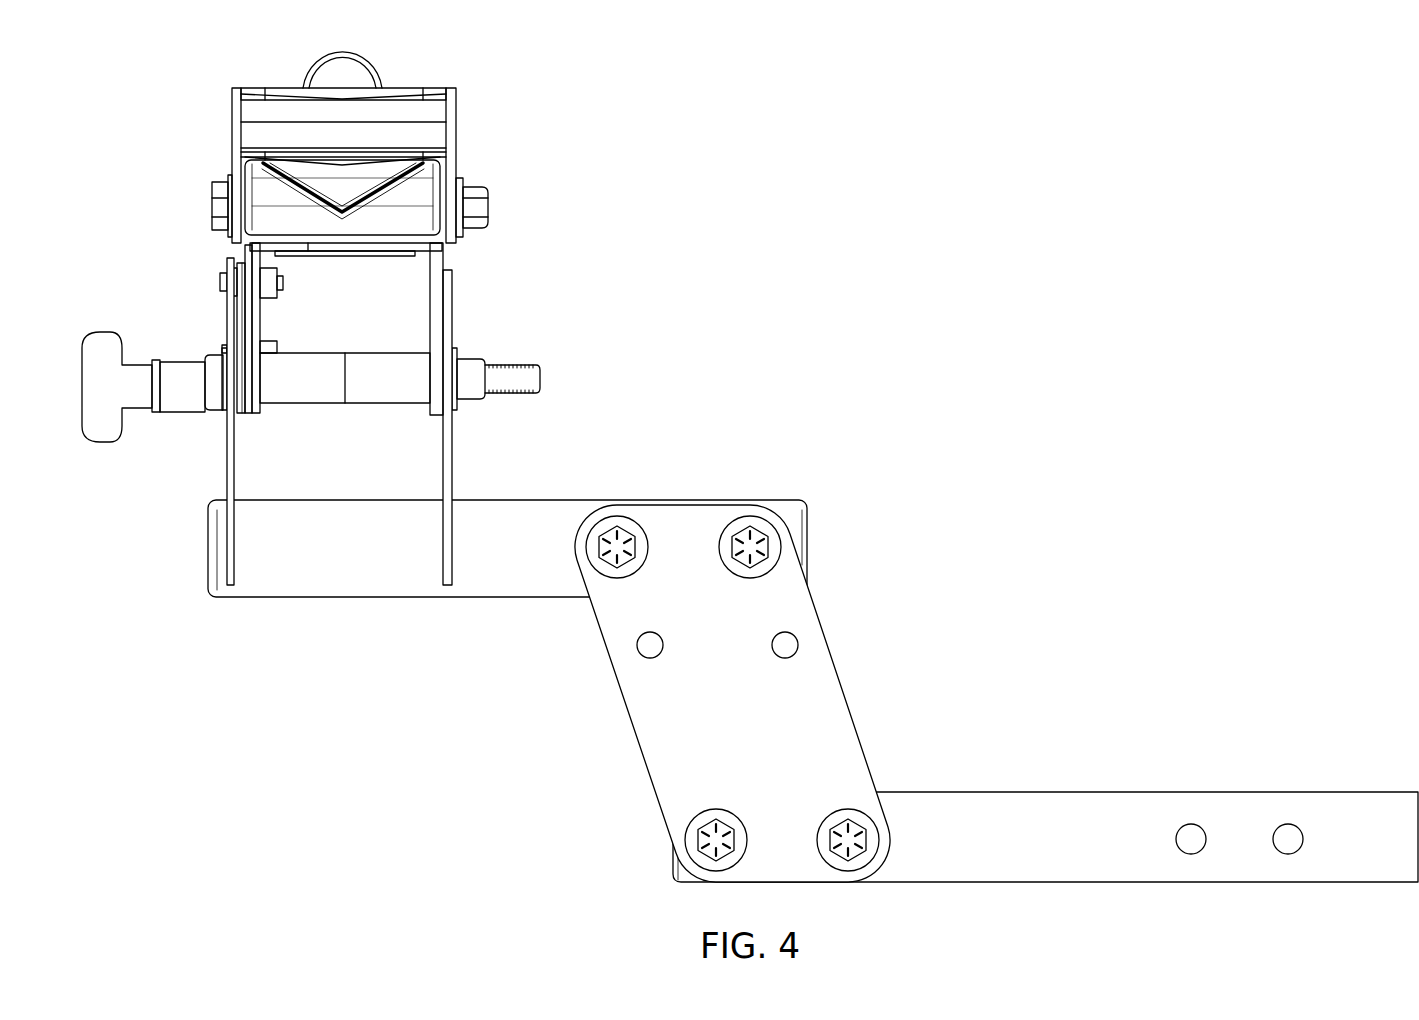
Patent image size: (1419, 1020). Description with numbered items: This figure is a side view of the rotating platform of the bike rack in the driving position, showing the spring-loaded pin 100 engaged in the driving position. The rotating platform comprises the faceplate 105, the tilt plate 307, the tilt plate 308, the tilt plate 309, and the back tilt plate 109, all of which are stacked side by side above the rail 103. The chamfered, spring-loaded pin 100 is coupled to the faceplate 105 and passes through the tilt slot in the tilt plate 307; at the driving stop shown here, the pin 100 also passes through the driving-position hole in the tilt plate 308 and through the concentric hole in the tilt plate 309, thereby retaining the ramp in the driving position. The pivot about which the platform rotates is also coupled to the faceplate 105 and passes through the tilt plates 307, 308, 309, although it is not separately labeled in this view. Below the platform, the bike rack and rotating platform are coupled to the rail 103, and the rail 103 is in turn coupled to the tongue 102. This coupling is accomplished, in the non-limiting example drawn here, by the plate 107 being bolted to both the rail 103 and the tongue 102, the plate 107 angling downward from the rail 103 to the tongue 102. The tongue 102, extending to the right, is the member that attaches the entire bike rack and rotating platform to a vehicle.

The pin 100 is at (80, 428).
The tongue 102 is at (1150, 791).
The rail 103 is at (542, 489).
The faceplate 105 is at (228, 462).
The plate 107 is at (832, 700).
The back tilt plate 109 is at (452, 318).
The tilt plate 307 is at (237, 416).
The tilt plate 308 is at (240, 415).
The tilt plate 309 is at (443, 258).